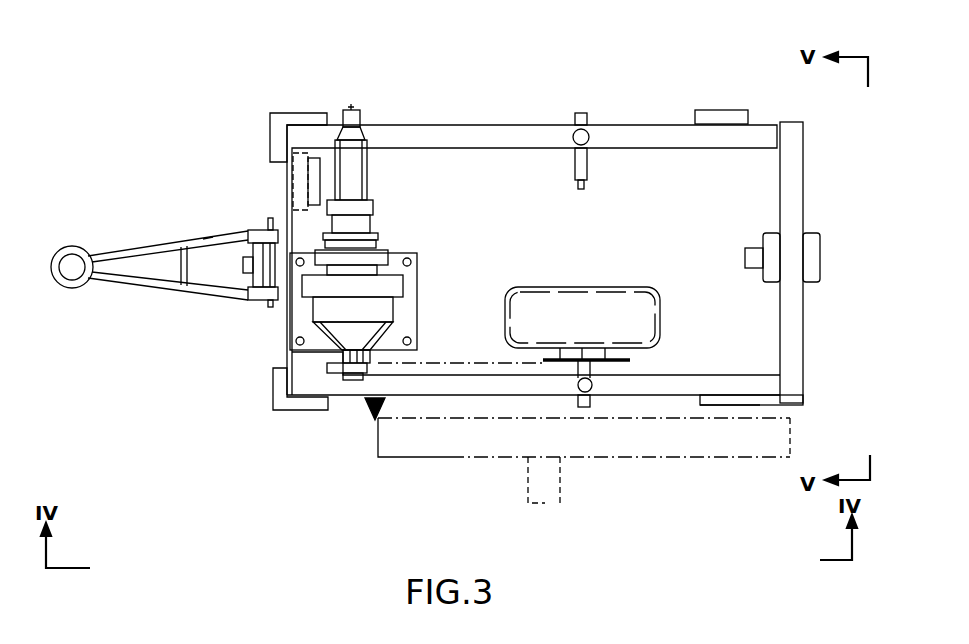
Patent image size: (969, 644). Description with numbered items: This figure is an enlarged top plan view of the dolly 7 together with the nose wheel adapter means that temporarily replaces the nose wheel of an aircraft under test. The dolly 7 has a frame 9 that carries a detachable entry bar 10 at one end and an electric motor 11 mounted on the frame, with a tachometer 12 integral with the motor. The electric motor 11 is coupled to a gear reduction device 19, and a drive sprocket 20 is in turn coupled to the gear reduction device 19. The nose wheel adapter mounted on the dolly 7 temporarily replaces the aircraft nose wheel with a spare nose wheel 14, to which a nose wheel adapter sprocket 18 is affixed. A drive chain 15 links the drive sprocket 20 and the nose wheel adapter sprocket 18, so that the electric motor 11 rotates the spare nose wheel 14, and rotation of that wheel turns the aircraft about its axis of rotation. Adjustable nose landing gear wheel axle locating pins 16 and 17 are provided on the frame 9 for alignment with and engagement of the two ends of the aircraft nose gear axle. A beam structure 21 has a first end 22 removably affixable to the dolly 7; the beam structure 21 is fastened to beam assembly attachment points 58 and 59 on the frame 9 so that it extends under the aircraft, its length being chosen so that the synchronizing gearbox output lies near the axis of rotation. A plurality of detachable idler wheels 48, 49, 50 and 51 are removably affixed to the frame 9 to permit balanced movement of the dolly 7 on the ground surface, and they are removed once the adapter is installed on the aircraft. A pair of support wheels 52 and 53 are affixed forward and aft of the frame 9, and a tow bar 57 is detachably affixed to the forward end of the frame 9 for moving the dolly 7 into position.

The dolly 7 is at (452, 133).
The frame 9 is at (690, 382).
The detachable entry bar 10 is at (805, 298).
The electric motor 11 is at (345, 178).
The tachometer 12 is at (358, 115).
The spare nose wheel 14 is at (642, 300).
The drive chain 15 is at (455, 365).
The nose landing gear wheel axle locating pin 16 is at (590, 372).
The nose landing gear wheel axle locating pin 17 is at (590, 170).
The nose wheel adapter sprocket 18 is at (612, 361).
The gear reduction device 19 is at (327, 318).
The drive sprocket 20 is at (340, 368).
The beam structure 21 is at (548, 503).
The first end 22 is at (482, 446).
The detachable idler wheel 48 is at (736, 110).
The detachable idler wheel 49 is at (740, 405).
The detachable idler wheel 50 is at (273, 404).
The detachable idler wheel 51 is at (270, 135).
The support wheel 52 is at (243, 263).
The support wheel 53 is at (745, 255).
The tow bar 57 is at (172, 290).
The beam assembly attachment point 58 is at (368, 406).
The beam assembly attachment point 59 is at (805, 402).